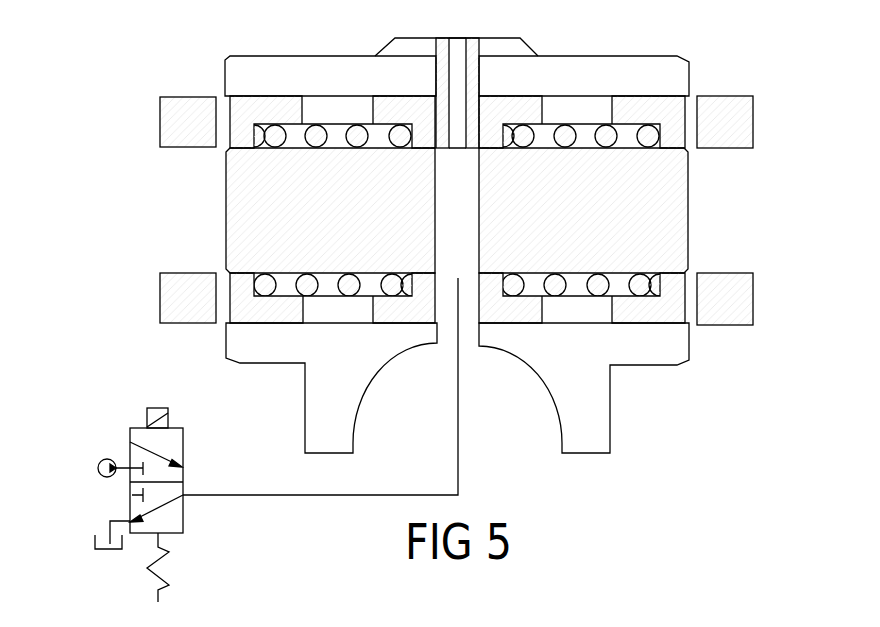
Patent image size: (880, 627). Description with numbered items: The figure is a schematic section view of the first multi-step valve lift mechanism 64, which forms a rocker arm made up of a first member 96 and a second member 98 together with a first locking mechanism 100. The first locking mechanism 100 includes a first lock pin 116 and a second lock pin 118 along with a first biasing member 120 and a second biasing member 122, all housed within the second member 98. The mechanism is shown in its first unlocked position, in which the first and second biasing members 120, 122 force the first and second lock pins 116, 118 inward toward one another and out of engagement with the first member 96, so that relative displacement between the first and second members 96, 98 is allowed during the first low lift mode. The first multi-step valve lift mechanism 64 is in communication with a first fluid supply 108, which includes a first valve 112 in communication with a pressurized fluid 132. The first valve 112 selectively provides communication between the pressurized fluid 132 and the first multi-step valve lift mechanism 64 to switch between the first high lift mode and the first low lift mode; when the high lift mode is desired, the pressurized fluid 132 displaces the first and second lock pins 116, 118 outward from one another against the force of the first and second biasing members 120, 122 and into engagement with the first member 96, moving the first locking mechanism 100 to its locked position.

The first multi-step valve lift mechanism 64 is at (162, 71).
The first member 96 is at (190, 323).
The second member 98 is at (272, 363).
The first locking mechanism 100 is at (425, 253).
The first fluid supply 108 is at (145, 471).
The first valve 112 is at (184, 520).
The first lock pin 116 is at (226, 209).
The second lock pin 118 is at (689, 210).
The first biasing member 120 is at (352, 287).
The second biasing member 122 is at (598, 287).
The pressurized fluid 132 is at (100, 461).